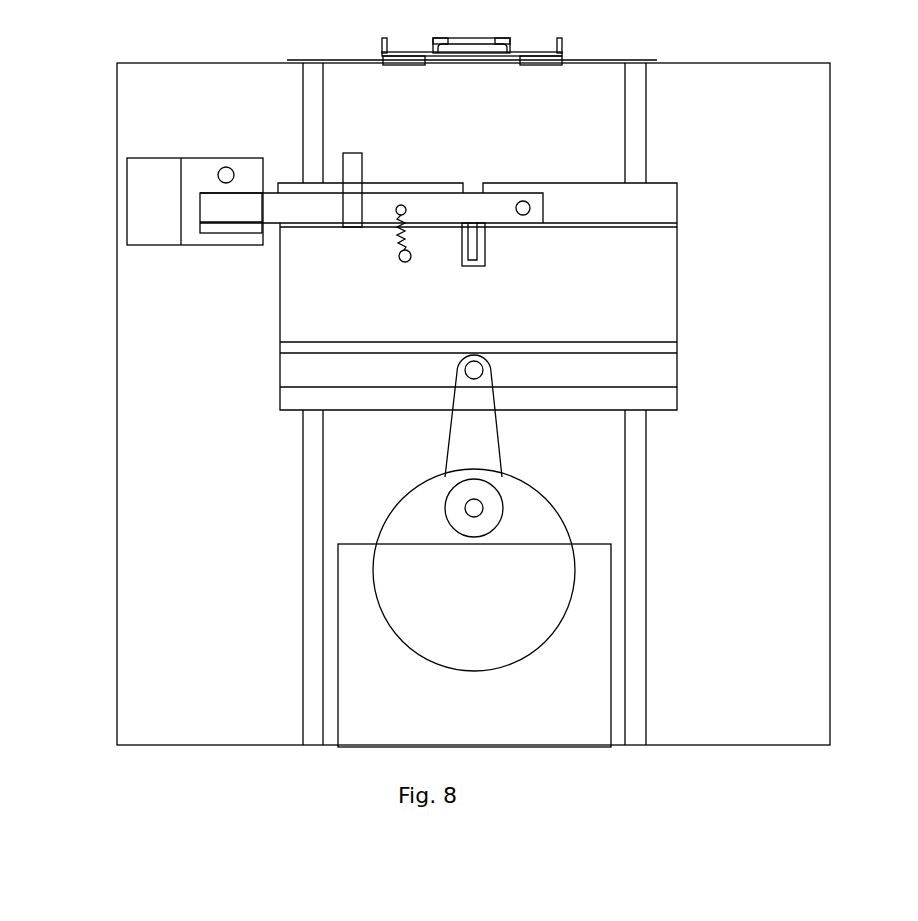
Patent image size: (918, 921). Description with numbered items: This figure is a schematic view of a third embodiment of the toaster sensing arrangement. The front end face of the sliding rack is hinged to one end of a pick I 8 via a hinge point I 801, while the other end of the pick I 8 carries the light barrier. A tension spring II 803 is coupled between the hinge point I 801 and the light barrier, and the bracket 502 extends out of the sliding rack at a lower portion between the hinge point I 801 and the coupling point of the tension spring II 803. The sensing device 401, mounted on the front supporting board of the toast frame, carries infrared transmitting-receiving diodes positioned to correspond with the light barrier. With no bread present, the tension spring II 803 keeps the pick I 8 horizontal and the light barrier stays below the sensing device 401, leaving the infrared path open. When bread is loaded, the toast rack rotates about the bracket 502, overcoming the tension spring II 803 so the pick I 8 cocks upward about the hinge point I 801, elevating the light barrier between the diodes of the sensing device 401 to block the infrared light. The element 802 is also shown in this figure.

The pick I 8 is at (546, 226).
The sensing device 401 is at (170, 198).
The hinge point I 801 is at (520, 202).
The slider block 802 is at (237, 218).
The tension spring II 803 is at (395, 245).
The bracket 502 is at (475, 248).